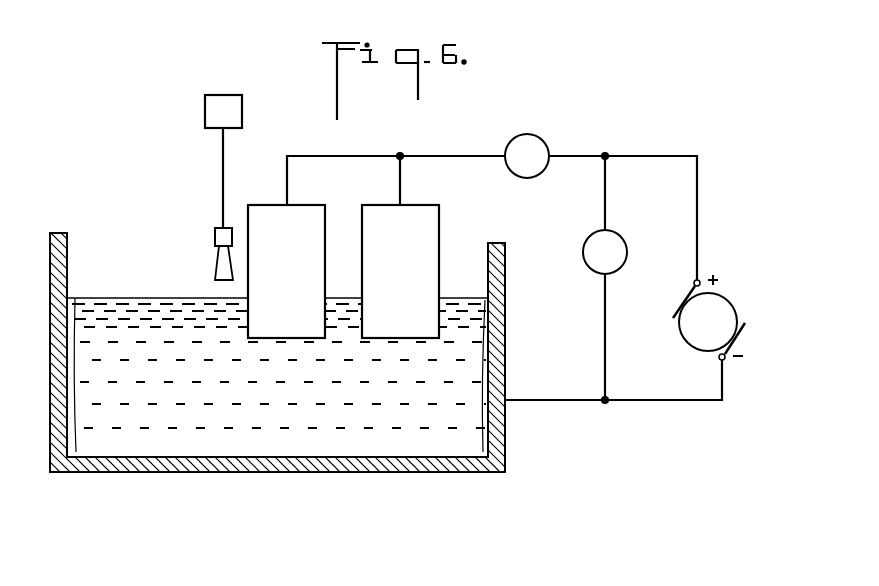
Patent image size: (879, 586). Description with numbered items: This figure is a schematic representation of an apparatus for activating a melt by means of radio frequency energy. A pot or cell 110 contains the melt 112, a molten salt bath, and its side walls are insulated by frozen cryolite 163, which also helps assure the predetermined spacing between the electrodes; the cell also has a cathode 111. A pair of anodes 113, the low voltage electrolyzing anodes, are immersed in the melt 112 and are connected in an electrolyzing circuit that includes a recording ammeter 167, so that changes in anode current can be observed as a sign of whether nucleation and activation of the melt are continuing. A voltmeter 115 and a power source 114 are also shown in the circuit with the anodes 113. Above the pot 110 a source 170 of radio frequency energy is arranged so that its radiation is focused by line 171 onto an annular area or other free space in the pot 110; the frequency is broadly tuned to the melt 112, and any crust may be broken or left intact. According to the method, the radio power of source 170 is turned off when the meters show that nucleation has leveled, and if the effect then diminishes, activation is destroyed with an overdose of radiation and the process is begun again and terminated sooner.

The cell 110 is at (150, 473).
The cathode 111 is at (235, 473).
The melt 112 is at (337, 452).
The anodes 113 is at (366, 205).
The battery / power source 114 is at (700, 340).
The voltmeter 115 is at (589, 232).
The frozen cryolite 163 is at (486, 424).
The recording ammeters 167 is at (541, 140).
The source 170 is at (208, 111).
The line 171 is at (223, 170).